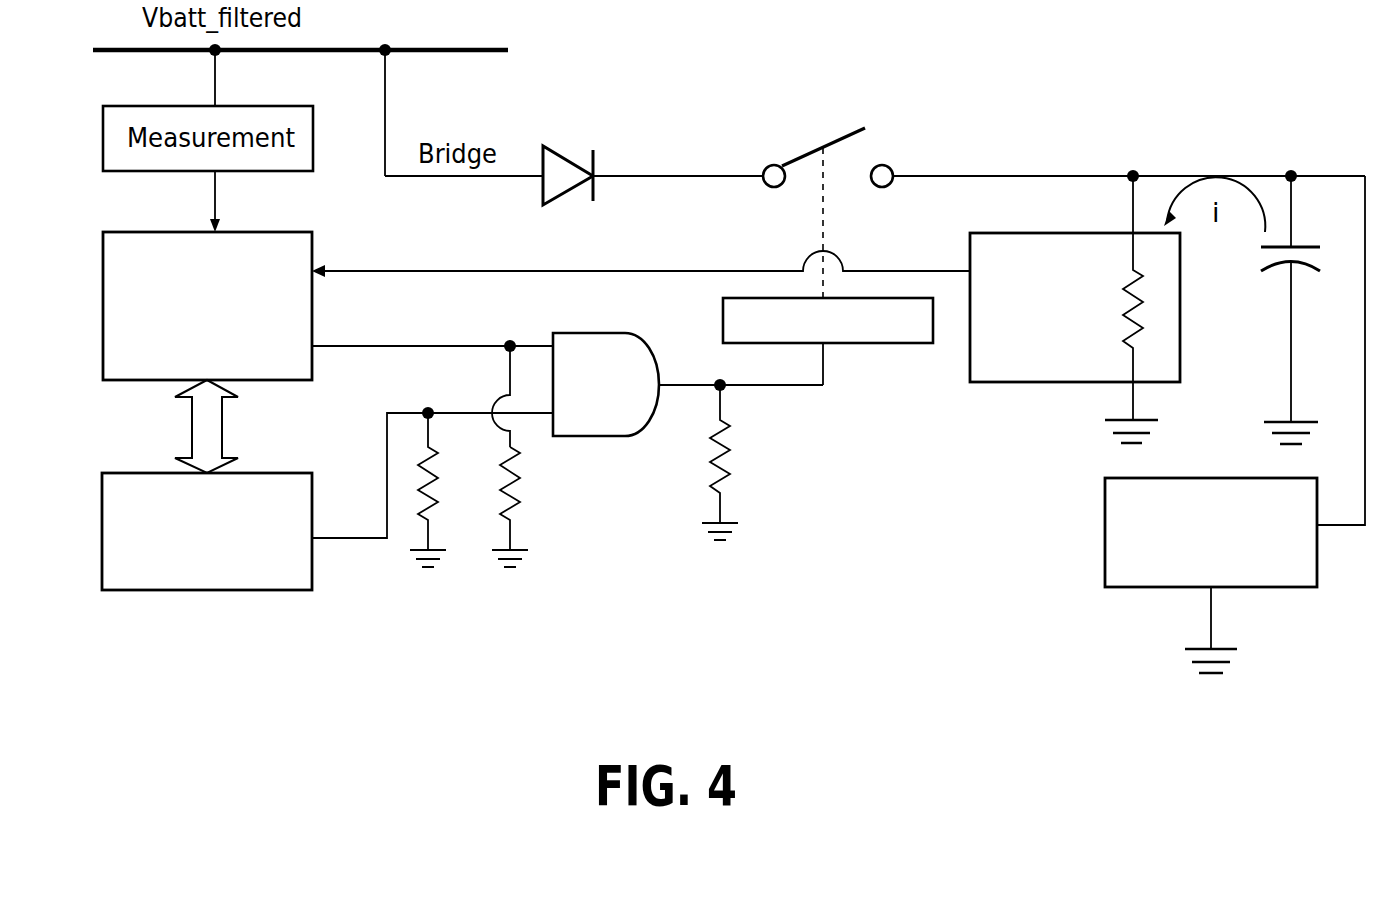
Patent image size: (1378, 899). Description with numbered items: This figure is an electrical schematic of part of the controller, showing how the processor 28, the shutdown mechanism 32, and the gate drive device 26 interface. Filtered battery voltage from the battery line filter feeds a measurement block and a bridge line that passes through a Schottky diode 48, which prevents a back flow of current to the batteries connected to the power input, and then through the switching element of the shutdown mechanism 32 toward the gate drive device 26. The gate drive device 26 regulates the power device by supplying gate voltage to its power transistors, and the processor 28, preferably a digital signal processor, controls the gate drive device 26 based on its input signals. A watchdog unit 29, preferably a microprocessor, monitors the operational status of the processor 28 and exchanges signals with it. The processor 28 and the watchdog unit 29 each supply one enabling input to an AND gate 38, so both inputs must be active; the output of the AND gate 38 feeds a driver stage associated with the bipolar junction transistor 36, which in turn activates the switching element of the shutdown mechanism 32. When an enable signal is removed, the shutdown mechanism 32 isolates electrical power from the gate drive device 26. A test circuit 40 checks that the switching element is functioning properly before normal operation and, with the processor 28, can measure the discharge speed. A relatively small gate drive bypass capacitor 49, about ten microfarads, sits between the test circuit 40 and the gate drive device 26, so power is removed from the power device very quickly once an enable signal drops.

The gate drive device 26 is at (1147, 587).
The processor 28 is at (103, 303).
The watchdog unit 29 is at (232, 590).
The shutdown mechanism 32 is at (866, 147).
The bipolar junction transistor 36 is at (892, 343).
The AND gate 38 is at (582, 436).
The test circuit 40 is at (1020, 382).
The Schottky diode 48 is at (562, 157).
The gate drive bypass capacitor 49 is at (1298, 247).